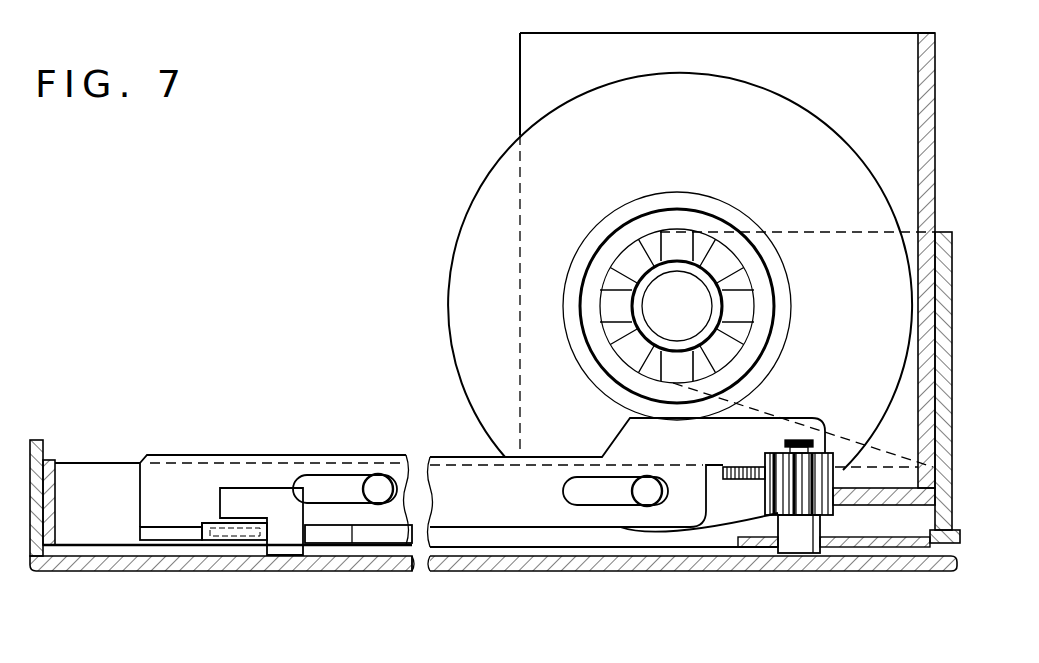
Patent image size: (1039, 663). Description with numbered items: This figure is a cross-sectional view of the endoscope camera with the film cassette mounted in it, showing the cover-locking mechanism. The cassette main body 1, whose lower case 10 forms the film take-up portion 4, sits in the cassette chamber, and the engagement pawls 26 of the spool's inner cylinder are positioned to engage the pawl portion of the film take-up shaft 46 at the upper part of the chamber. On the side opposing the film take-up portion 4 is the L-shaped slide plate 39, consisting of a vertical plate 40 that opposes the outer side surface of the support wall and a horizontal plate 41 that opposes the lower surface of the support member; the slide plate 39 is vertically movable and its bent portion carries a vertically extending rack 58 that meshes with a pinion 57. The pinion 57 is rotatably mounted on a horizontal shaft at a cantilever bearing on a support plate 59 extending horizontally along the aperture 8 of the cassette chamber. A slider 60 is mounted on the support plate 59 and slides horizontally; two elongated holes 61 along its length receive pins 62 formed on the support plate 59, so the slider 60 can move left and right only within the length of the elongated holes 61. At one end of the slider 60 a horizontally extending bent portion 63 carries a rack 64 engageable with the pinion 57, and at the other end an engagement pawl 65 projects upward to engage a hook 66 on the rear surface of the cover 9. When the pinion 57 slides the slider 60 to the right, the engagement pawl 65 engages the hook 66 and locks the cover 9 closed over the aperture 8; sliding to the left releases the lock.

The cassette main body 1 is at (787, 100).
The film take-up portion 4 is at (718, 90).
The aperture 8 is at (587, 566).
The cover 9 is at (672, 571).
The lower case 10 is at (505, 513).
The engagement pawls 26 is at (676, 240).
The slide plate 39 is at (937, 178).
The vertical plate 40 is at (928, 132).
The horizontal plate 41 is at (905, 420).
The film take-up shaft 46 is at (916, 498).
The pinion 57 is at (790, 503).
The rack 58 is at (833, 497).
The support plate 59 is at (100, 476).
The slider 60 is at (210, 472).
The elongated holes 61 is at (597, 475).
The pins 62 is at (650, 490).
The bent portion 63 is at (753, 467).
The rack 64 is at (733, 467).
The engagement pawl 65 is at (165, 536).
The hook 66 is at (262, 505).